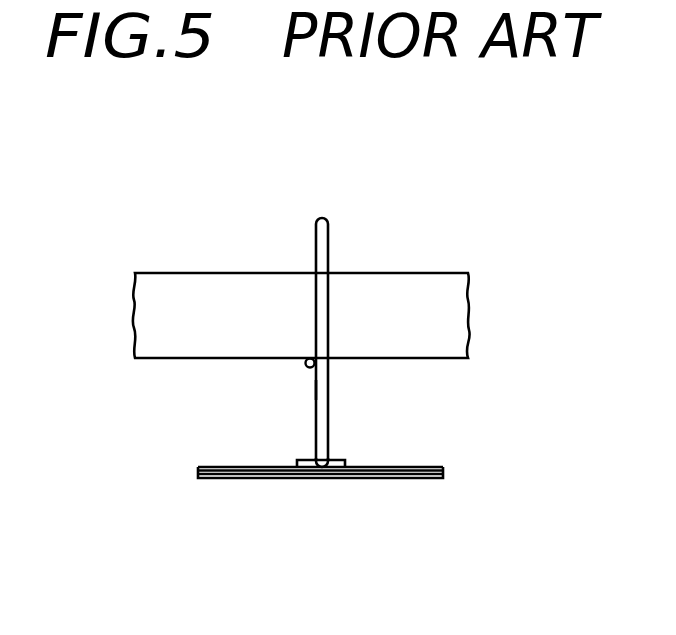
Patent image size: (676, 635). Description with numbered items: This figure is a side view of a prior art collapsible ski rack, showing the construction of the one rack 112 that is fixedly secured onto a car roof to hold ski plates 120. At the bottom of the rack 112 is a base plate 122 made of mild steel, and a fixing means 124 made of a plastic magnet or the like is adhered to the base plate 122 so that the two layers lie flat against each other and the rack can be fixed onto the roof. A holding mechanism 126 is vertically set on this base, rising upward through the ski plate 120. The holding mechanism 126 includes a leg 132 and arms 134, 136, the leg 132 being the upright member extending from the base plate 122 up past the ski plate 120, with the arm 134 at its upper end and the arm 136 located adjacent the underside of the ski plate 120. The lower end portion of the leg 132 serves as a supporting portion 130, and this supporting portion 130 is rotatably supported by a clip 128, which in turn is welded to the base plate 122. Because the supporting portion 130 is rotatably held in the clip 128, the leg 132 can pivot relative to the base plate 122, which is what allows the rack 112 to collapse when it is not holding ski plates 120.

The front side rack 112 is at (276, 252).
The ski plate 120 is at (160, 284).
The base plate 122 is at (205, 467).
The fixing means 124 is at (226, 479).
The holding mechanism 126 is at (302, 392).
The clip 128 is at (347, 465).
The supporting portion 130 is at (318, 460).
The leg 132 is at (330, 410).
The arm 134 is at (322, 218).
The arm 136 is at (305, 363).